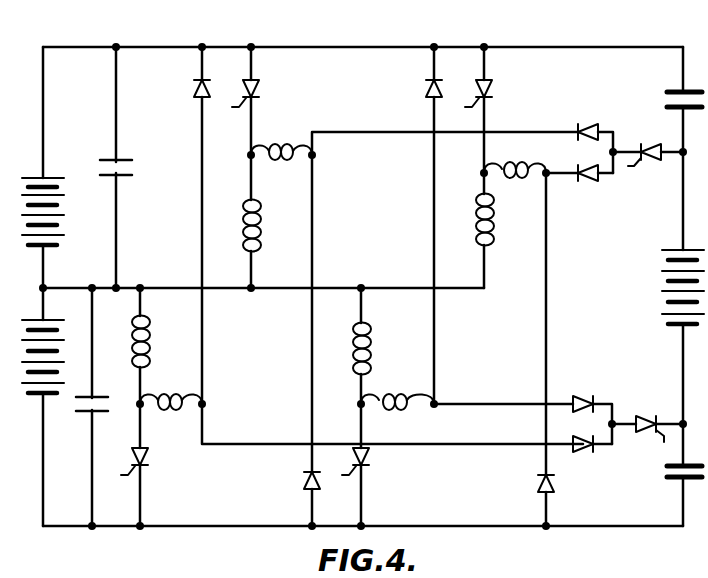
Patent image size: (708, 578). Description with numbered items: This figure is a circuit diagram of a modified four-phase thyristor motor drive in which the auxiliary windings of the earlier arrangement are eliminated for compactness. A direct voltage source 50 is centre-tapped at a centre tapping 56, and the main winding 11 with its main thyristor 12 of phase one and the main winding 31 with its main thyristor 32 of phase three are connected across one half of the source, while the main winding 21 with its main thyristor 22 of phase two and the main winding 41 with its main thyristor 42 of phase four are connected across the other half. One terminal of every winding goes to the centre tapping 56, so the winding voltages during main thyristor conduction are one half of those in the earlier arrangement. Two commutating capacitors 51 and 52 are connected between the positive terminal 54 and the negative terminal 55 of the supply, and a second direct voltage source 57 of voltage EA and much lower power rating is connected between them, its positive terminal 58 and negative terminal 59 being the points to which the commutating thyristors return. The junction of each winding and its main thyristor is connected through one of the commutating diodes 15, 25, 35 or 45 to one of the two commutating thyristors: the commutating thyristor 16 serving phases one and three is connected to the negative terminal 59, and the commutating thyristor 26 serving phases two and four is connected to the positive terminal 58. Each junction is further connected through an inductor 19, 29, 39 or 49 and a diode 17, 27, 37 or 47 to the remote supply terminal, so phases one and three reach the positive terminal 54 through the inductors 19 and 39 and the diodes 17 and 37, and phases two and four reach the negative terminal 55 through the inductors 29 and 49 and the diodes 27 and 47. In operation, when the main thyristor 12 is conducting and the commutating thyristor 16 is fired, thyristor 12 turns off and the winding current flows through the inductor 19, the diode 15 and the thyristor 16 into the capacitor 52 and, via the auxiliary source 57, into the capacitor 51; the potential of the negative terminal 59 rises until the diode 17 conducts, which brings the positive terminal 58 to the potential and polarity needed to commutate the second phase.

The main winding 11 is at (152, 335).
The main thyristor 12 is at (147, 456).
The diode 15 is at (588, 453).
The commutating thyristor 16 is at (645, 434).
The diode 17 is at (194, 89).
The inductor 19 is at (168, 411).
The main winding 21 is at (262, 232).
The main thyristor 22 is at (262, 87).
The diode 25 is at (588, 121).
The commutating thyristor 26 is at (652, 142).
The diode 27 is at (305, 480).
The inductor 29 is at (281, 146).
The main winding 31 is at (373, 337).
The main thyristor 32 is at (370, 482).
The diode 35 is at (583, 394).
The diode 37 is at (427, 90).
The inductor 39 is at (402, 410).
The main winding 41 is at (492, 238).
The main thyristor 42 is at (493, 90).
The diode 45 is at (585, 182).
The diode 47 is at (537, 483).
The inductor 49 is at (516, 179).
The direct voltage source 50 is at (60, 236).
The commutating capacitor 51 is at (673, 88).
The commutating capacitor 52 is at (673, 483).
The positive terminal 54 is at (172, 47).
The negative terminal 55 is at (103, 530).
The centre tapping 56 is at (117, 290).
The second direct voltage source 57 is at (664, 270).
The positive terminal 58 is at (682, 158).
The negative terminal 59 is at (681, 421).